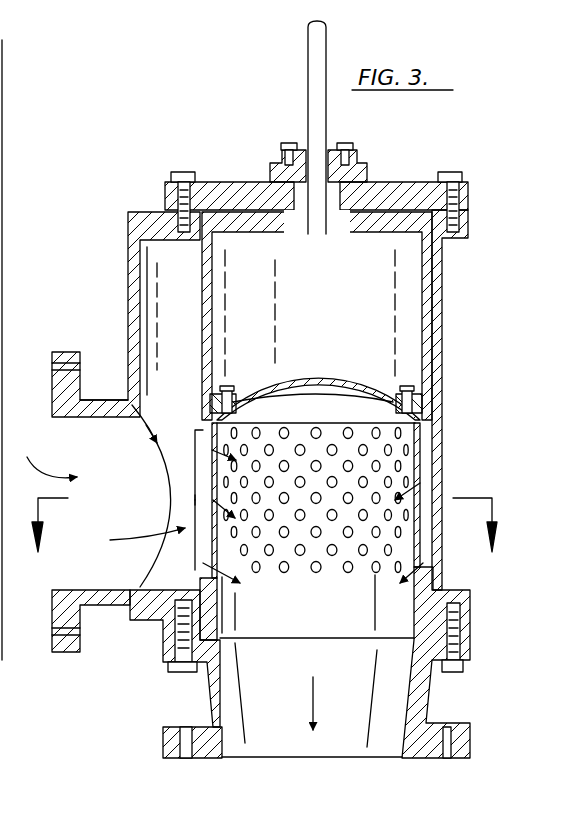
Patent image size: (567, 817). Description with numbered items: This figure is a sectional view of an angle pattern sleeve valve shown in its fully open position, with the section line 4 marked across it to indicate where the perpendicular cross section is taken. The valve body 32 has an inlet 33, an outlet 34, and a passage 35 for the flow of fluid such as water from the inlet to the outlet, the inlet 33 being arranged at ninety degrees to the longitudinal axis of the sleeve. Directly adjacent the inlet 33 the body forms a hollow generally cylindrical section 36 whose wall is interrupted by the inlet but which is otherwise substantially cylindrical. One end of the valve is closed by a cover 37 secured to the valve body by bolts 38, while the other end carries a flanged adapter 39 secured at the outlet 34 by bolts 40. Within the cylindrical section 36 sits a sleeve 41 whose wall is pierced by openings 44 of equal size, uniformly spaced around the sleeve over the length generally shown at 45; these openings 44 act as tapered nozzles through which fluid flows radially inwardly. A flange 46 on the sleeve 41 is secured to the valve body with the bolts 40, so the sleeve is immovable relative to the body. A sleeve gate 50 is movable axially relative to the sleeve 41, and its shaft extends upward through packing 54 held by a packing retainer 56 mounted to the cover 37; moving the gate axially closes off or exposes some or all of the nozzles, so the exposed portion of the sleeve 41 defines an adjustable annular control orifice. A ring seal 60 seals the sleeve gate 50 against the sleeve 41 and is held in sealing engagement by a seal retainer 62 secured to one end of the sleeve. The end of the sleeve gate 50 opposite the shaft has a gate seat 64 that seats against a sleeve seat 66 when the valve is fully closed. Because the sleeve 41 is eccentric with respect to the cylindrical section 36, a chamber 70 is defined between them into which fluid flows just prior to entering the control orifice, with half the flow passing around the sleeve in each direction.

The section line 4- 4 is at (262, 539).
The valve body 32 is at (128, 295).
The inlet 33 is at (44, 456).
The outlet 34 is at (272, 612).
The passage 35 is at (115, 403).
The hollow generally cylindrical section 36 is at (442, 472).
The cover 37 is at (219, 184).
The bolts 38 is at (185, 172).
The flanged adapter 39 is at (210, 695).
The bolts 40 is at (172, 673).
The sleeve 41 is at (420, 460).
The openings 44 is at (285, 540).
The length of the sleeve with openings 45 is at (190, 503).
The flange 46 is at (165, 630).
The sleeve gate 50 is at (425, 307).
The packing 54 is at (362, 172).
The packing retainer 56 is at (350, 147).
The ring seal 60 is at (205, 410).
The seal retainer 62 is at (233, 393).
The gate seat 64 is at (200, 435).
The sleeve seat 66 is at (205, 573).
The chamber 70 is at (134, 536).